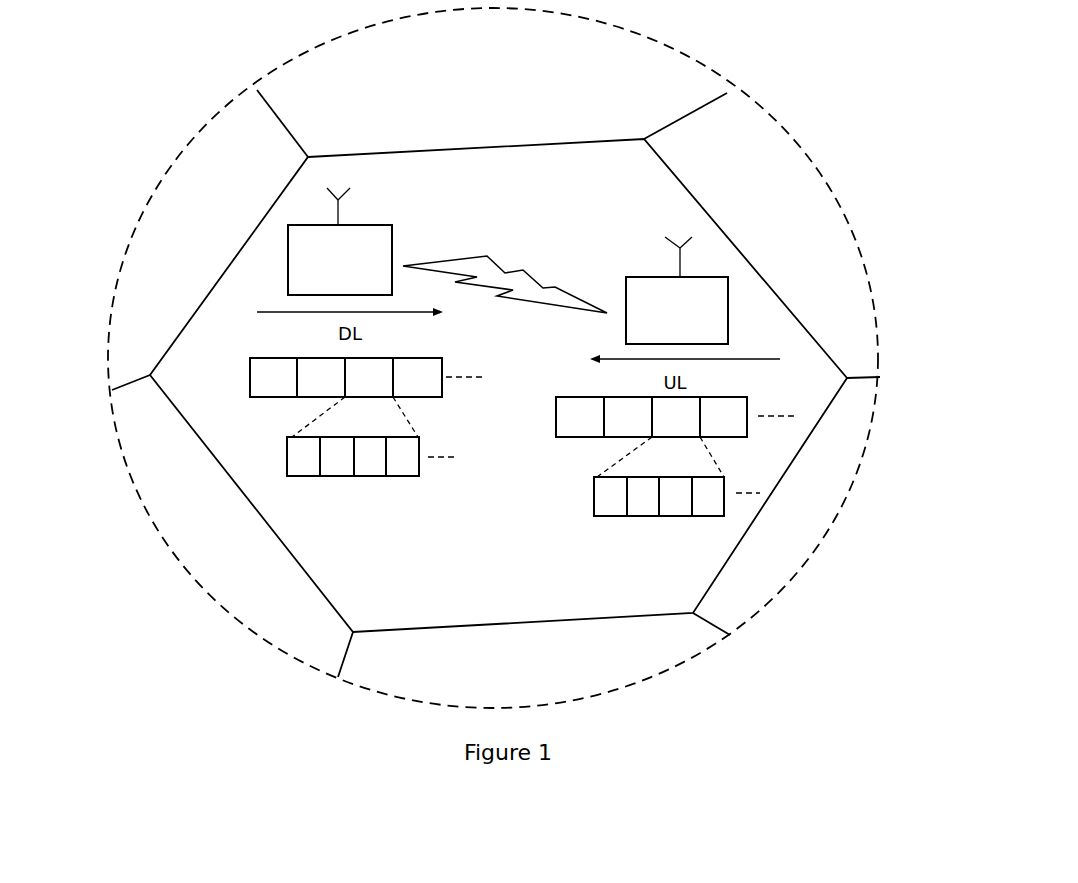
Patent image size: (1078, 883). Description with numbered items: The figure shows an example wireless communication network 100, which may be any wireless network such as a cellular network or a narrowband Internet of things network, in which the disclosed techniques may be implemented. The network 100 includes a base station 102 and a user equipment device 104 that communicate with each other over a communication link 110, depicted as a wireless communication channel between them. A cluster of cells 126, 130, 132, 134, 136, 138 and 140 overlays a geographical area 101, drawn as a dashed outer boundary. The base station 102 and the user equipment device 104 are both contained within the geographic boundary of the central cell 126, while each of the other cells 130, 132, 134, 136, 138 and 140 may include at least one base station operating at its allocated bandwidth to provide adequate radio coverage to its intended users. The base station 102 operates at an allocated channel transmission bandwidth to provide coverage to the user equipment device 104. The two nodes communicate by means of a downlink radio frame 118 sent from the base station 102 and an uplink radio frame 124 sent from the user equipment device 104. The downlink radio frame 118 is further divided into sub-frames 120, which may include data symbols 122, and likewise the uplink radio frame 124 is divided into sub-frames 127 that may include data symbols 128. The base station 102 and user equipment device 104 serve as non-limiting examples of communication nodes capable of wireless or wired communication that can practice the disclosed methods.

The wireless communication network 100 is at (896, 123).
The geographical area 101 is at (125, 243).
The base station 102 is at (340, 241).
The user equipment device 104 is at (677, 290).
The communication link 110 is at (495, 262).
The downlink radio frame 118 is at (257, 378).
The sub-frame 120 is at (291, 465).
The data symbols 122 is at (372, 474).
The uplink radio frame 124 is at (562, 417).
The cell 126 is at (517, 586).
The sub-frame 127 is at (597, 505).
The data symbols 128 is at (678, 512).
The cell 130 is at (241, 166).
The cell 132 is at (603, 110).
The cell 134 is at (823, 297).
The cell 136 is at (753, 574).
The cell 138 is at (443, 654).
The cell 140 is at (169, 460).